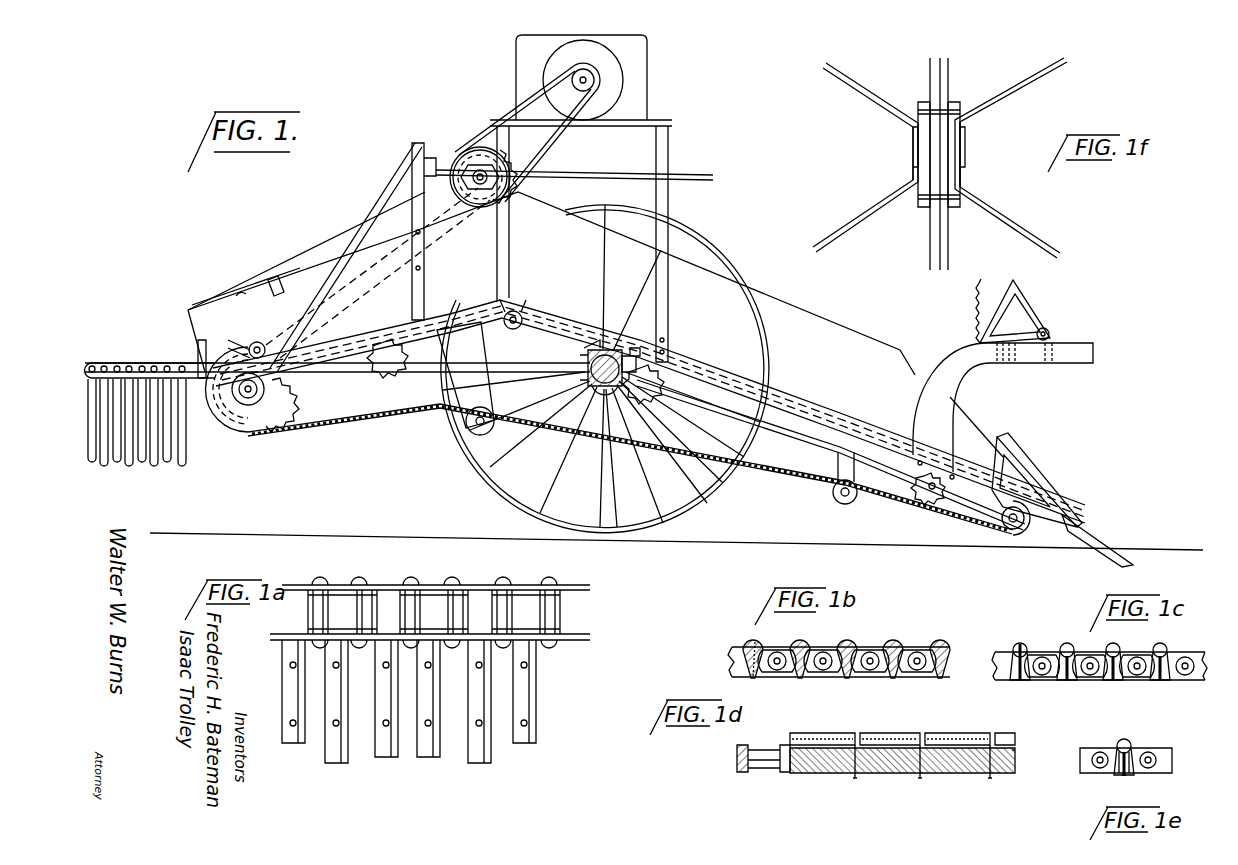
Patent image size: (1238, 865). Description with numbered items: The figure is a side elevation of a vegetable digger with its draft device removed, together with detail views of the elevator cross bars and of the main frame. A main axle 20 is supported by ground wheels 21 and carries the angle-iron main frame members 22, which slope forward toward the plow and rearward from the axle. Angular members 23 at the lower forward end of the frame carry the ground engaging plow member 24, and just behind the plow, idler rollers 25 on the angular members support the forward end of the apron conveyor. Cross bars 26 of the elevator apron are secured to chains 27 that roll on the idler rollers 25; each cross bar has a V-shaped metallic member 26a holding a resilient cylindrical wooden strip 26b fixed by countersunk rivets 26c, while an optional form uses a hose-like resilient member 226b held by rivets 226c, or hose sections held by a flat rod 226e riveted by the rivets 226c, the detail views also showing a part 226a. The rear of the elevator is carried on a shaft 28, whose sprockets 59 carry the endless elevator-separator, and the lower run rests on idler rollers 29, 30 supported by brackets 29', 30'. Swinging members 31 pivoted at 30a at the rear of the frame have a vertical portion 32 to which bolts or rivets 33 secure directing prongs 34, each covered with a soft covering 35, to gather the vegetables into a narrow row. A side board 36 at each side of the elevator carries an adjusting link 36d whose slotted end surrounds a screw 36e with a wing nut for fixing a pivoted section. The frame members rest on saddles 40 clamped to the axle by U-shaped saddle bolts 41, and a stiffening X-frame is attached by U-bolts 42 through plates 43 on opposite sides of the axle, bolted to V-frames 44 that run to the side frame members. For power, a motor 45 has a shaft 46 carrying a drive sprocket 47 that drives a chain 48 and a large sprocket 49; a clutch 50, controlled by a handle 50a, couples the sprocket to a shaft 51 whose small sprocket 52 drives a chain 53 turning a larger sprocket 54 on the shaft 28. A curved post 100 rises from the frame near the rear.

In FIG. 1, the main axle 20 is at (590, 396).
In FIG. 1, the ground wheels 21 is at (712, 225).
In FIG. 1, the main frame member 22 is at (766, 371).
In FIG. 1F, the main frame member 22 is at (930, 236).
In FIG. 1, the angular members 23 is at (1040, 475).
In FIG. 1, the plow member 24 is at (1093, 540).
In FIG. 1, the idler sprockets or rollers 25 is at (1006, 538).
In FIG. 1A, the cross bar 26 is at (350, 763).
In FIG. 1B, the cross bar 26 is at (845, 678).
In FIG. 1C, the cross bar 26 is at (1078, 682).
In FIG. 1D, the cross bar 26 is at (800, 770).
In FIG. 1E, the cross bar 26 is at (1130, 776).
In FIG. 1B, the V-shaped metallic member 26a is at (795, 645).
In FIG. 1C, the V-shaped metallic member 26a is at (1118, 648).
In FIG. 1B, the cylindrical wooden strip 26b is at (846, 644).
In FIG. 1B, the countersunk rivets 26c is at (892, 644).
In FIG. 1, the chains 27 is at (376, 408).
In FIG. 1A, the chains 27 is at (530, 585).
In FIG. 1B, the chains 27 is at (730, 655).
In FIG. 1C, the chains 27 is at (1195, 648).
In FIG. 1D, the chains 27 is at (760, 748).
In FIG. 1E, the chains 27 is at (1172, 760).
In FIG. 1, the shaft 28 is at (266, 389).
In FIG. 1, the idler roller 29 is at (457, 439).
In FIG. 1, the bracket 29' is at (451, 384).
In FIG. 1, the idler roller 30 is at (862, 500).
In FIG. 1, the bracket 30' is at (825, 487).
In FIG. 1, the pivot 30a is at (260, 342).
In FIG. 1, the swinging members 31 is at (230, 338).
In FIG. 1, the vertical portion 32 is at (200, 352).
In FIG. 1, the bolts or rivets 33 is at (134, 362).
In FIG. 1, the guiding or directing prongs 34 is at (86, 360).
In FIG. 1, the soft covering 35 is at (146, 464).
In FIG. 1, the side board 36 is at (238, 293).
In FIG. 1, the adjusting link 36d is at (271, 280).
In FIG. 1, the screw 36e is at (242, 302).
In FIG. 1, the saddles 40 is at (612, 342).
In FIG. 1, the U-shaped saddle bolts 41 is at (640, 350).
In FIG. 1F, the U-bolts 42 is at (910, 130).
In FIG. 1, the plates 43 is at (580, 352).
In FIG. 1F, the plates 43 is at (918, 104).
In FIG. 1, the V-frames 44 is at (770, 435).
In FIG. 1F, the V-frames 44 is at (866, 110).
In FIG. 1, the motor 45 is at (643, 48).
In FIG. 1, the shaft 46 is at (598, 80).
In FIG. 1, the drive sprocket 47 is at (580, 70).
In FIG. 1, the chain 48 is at (552, 125).
In FIG. 1, the large sprocket 49 is at (476, 145).
In FIG. 1, the clutch 50 is at (508, 180).
In FIG. 1, the handle 50a is at (576, 178).
In FIG. 1, the shaft 51 is at (480, 190).
In FIG. 1, the small sprocket 52 is at (520, 146).
In FIG. 1, the chain 53 is at (386, 230).
In FIG. 1, the larger sprocket 54 is at (240, 430).
In FIG. 1, the sprockets 59 is at (268, 426).
In FIG. 1, the curved post 100 is at (965, 346).
In FIG. 1C, the slat pin 226a is at (1165, 681).
In FIG. 1C, the hose-like resilient member 226b is at (1066, 644).
In FIG. 1D, the hose-like resilient member 226b is at (830, 733).
In FIG. 1E, the hose-like resilient member 226b is at (1118, 744).
In FIG. 1C, the rivets 226c is at (1150, 680).
In FIG. 1D, the rivets 226c is at (922, 776).
In FIG. 1E, the rivets 226c is at (1120, 776).
In FIG. 1D, the flat rod 226e is at (1015, 755).
In FIG. 1E, the flat rod 226e is at (1132, 748).